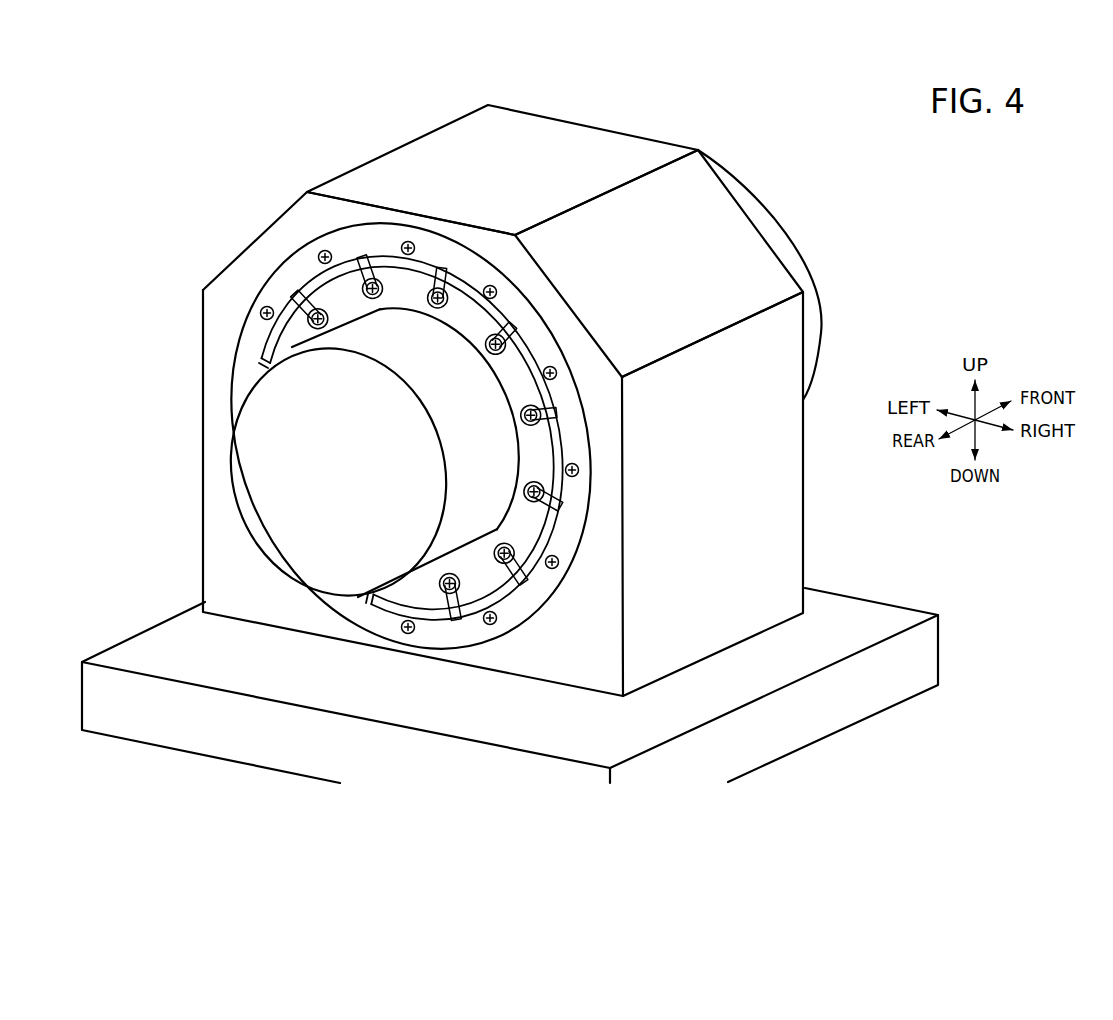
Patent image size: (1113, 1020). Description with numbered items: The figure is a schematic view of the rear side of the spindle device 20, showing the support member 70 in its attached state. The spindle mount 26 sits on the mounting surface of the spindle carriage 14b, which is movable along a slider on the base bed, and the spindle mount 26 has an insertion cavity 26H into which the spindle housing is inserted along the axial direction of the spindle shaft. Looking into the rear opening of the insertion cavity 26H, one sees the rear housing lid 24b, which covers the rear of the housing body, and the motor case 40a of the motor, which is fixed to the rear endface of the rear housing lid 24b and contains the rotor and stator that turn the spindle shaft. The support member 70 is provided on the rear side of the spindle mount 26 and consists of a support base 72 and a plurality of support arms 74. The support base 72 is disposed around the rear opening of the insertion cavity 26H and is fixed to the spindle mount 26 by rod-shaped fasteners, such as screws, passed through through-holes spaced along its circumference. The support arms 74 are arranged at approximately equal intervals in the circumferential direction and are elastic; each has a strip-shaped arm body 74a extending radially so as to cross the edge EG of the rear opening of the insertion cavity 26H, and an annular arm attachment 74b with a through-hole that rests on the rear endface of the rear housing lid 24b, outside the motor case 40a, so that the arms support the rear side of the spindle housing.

The spindle device 20 is at (885, 194).
The spindle mount 26 is at (786, 488).
The spindle carriage 14b is at (870, 613).
The support base 72 is at (255, 320).
The support member 70 is at (325, 231).
The edge of the rear opening EG is at (262, 346).
The insertion cavity 26H is at (419, 605).
The rear housing lid 24b is at (538, 478).
The motor case 40a is at (258, 440).
The support arm 74 is at (413, 441).
The arm body 74a is at (310, 312).
The arm attachment 74b is at (292, 296).